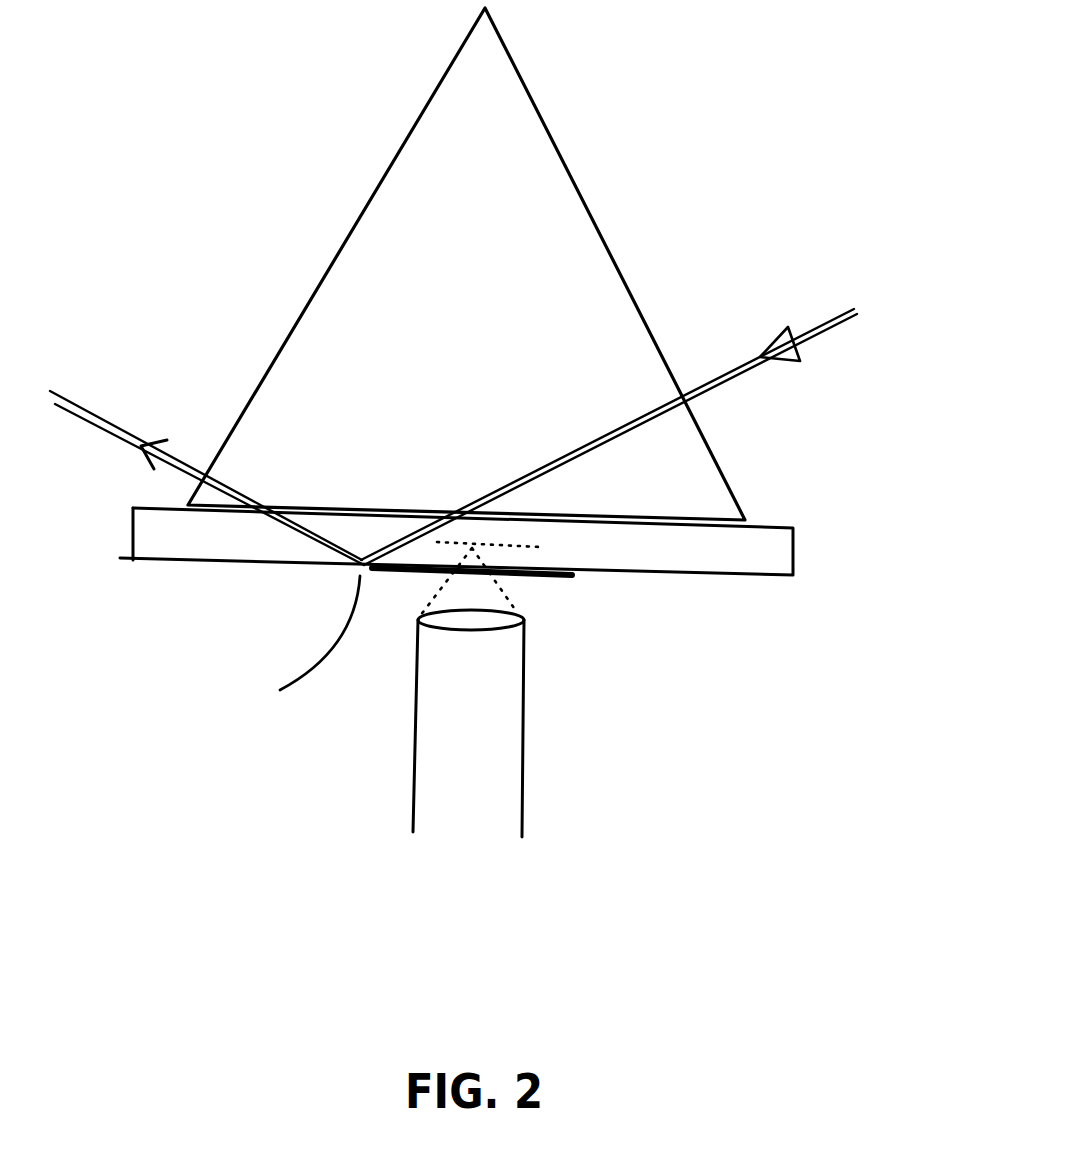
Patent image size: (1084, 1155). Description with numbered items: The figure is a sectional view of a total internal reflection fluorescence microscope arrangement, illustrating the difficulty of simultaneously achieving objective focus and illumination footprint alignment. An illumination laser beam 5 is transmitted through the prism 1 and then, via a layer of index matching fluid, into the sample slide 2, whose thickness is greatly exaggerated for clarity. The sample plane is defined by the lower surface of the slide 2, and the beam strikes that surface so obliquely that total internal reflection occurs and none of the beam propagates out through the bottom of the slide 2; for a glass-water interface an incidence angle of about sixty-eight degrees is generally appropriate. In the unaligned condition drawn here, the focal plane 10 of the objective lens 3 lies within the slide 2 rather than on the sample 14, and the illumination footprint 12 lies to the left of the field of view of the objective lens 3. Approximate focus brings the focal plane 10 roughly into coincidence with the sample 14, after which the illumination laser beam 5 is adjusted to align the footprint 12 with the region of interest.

The prism 1 is at (585, 292).
The sample slide 2 is at (780, 555).
The objective lens 3 is at (498, 767).
The illumination laser beam 5 is at (837, 337).
The focal plane 10 is at (416, 572).
The illumination footprint 12 is at (299, 661).
The sample 14 is at (567, 583).